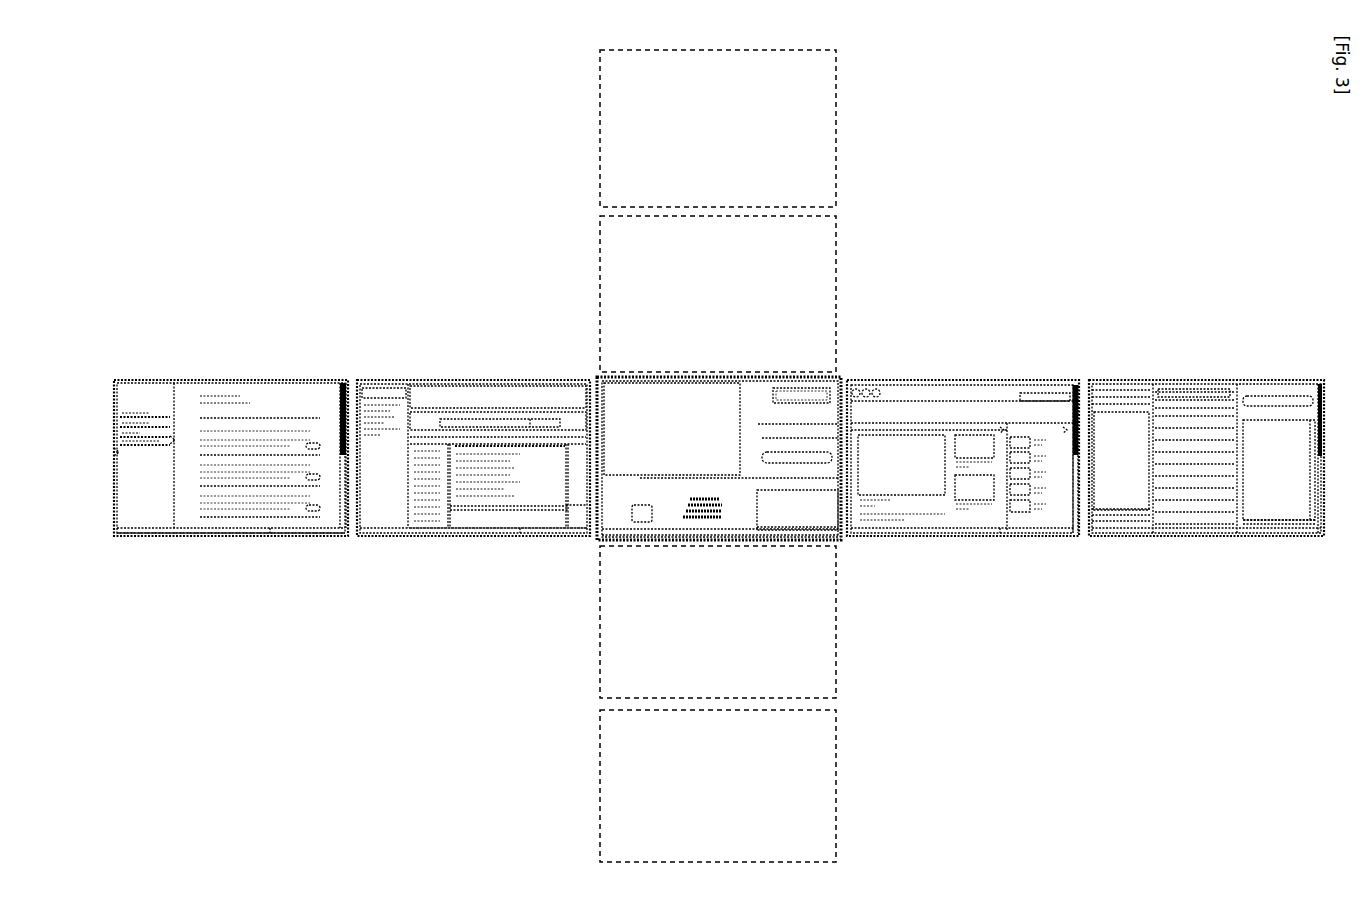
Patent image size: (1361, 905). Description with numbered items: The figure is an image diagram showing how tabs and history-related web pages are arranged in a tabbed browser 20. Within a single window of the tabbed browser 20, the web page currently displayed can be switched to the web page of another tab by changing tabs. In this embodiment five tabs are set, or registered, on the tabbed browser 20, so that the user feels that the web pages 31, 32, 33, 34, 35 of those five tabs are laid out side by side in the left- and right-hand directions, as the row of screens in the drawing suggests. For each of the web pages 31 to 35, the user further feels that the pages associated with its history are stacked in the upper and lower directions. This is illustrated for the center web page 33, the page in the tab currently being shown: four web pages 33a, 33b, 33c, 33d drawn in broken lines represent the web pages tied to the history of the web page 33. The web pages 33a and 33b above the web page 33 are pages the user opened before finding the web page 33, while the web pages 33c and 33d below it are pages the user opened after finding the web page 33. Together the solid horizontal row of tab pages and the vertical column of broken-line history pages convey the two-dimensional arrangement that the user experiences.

The tabbed browser 20 is at (633, 398).
The web page 31 is at (157, 378).
The web page 32 is at (401, 378).
The web page 33 is at (705, 423).
The web page 33a is at (836, 100).
The web page 33b is at (836, 264).
The web page 33c is at (836, 594).
The web page 33d is at (836, 759).
The web page 34 is at (1030, 378).
The web page 35 is at (1274, 378).